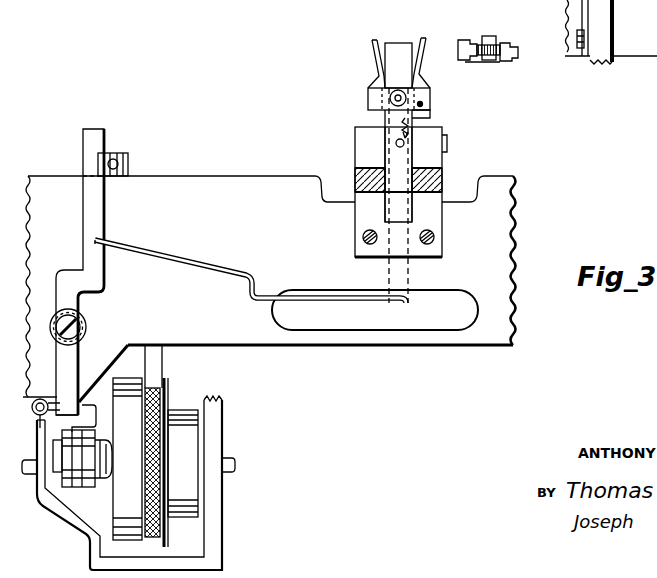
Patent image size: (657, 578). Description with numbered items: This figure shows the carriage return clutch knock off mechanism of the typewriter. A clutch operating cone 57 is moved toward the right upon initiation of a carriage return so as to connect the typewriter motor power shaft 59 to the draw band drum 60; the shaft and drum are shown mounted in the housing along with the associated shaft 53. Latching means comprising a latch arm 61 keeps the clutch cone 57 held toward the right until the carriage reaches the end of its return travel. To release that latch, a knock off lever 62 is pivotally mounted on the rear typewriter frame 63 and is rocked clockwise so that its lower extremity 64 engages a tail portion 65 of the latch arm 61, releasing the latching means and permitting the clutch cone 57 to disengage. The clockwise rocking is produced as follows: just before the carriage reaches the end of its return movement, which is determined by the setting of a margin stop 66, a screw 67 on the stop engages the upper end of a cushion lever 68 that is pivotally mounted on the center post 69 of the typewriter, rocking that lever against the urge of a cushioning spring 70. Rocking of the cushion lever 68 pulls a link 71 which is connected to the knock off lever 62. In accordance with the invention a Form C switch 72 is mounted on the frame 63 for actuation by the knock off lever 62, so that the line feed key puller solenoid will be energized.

The drive shaft 53 is at (156, 360).
The clutch operating cone 57 is at (110, 487).
The typewriter motor power shaft 59 is at (232, 455).
The draw band drum 60 is at (136, 378).
The latch arm 61 is at (40, 415).
The knock off lever 62 is at (88, 212).
The rear typewriter frame 63 is at (263, 177).
The lower extremity 64 is at (80, 398).
The tail portion 65 is at (62, 396).
The margin stop 66 is at (497, 38).
The screw 67 is at (462, 40).
The cushion lever 68 is at (423, 62).
The center post 69 is at (395, 44).
The cushioning spring 70 is at (412, 138).
The link 71 is at (237, 268).
The Form C switch 72 is at (124, 152).